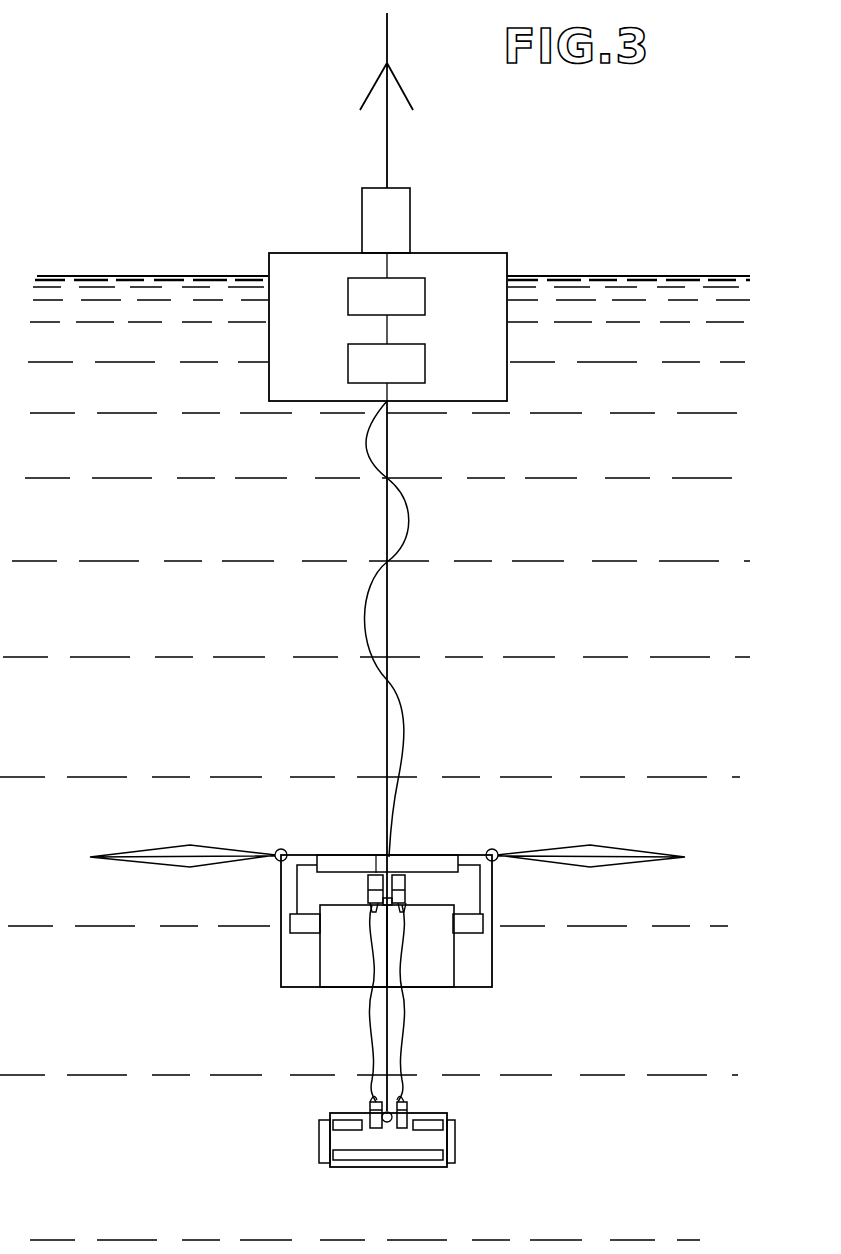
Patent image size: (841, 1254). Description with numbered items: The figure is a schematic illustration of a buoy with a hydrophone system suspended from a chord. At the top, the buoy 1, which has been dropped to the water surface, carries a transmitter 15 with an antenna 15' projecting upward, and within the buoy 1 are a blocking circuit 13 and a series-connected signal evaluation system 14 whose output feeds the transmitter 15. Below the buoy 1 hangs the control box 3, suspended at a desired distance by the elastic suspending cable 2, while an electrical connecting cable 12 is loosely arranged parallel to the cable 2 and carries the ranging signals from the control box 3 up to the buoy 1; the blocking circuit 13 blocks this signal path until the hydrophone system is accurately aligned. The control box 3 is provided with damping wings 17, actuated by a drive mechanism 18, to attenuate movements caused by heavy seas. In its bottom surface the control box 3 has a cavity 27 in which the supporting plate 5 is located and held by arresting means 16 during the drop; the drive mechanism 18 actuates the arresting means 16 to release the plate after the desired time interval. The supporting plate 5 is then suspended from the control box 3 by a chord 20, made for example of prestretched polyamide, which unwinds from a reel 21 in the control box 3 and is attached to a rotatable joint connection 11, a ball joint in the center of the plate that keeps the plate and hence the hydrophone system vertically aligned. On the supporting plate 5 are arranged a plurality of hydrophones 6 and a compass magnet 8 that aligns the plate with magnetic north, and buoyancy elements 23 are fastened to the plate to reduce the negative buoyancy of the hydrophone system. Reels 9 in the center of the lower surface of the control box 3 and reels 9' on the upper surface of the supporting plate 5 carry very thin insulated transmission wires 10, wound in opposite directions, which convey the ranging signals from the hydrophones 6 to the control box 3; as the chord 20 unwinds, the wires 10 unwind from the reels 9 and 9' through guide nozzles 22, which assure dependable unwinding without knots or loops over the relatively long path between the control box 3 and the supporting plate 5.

The buoy 1 is at (490, 352).
The elastic suspending cable 2 is at (388, 449).
The control box 3 is at (487, 891).
The supporting plate 5 is at (335, 1138).
The hydrophones 6 is at (344, 1123).
The compass magnet 8 is at (432, 1158).
The reels 9 is at (383, 888).
The reels 9' is at (374, 1149).
The transmission wires 10 is at (372, 1034).
The rotatable joint connection 11 is at (387, 1124).
The electrical connecting cable 12 is at (405, 524).
The blocking circuit 13 is at (413, 364).
The signal evaluation system 14 is at (415, 297).
The transmitter 15 is at (409, 220).
The antenna 15' is at (399, 100).
The arresting means 16 is at (290, 921).
The damping wings 17 is at (205, 845).
The drive mechanism 18 is at (429, 832).
The chord 20 is at (395, 1005).
The reel 21 is at (377, 855).
The guide nozzles 22 is at (372, 912).
The buoyancy elements 23 is at (322, 1155).
The cavity 27 is at (342, 972).